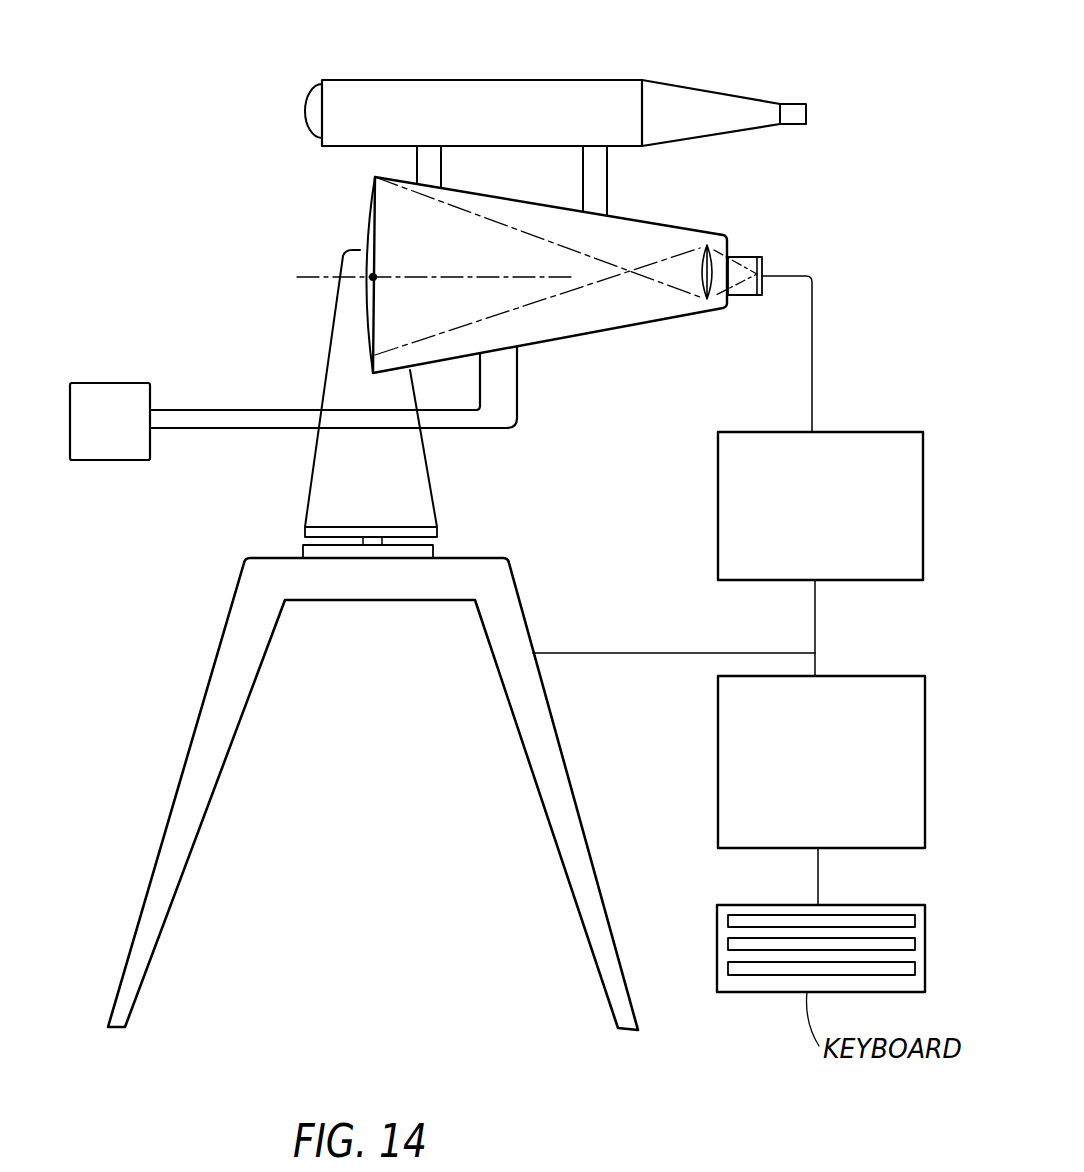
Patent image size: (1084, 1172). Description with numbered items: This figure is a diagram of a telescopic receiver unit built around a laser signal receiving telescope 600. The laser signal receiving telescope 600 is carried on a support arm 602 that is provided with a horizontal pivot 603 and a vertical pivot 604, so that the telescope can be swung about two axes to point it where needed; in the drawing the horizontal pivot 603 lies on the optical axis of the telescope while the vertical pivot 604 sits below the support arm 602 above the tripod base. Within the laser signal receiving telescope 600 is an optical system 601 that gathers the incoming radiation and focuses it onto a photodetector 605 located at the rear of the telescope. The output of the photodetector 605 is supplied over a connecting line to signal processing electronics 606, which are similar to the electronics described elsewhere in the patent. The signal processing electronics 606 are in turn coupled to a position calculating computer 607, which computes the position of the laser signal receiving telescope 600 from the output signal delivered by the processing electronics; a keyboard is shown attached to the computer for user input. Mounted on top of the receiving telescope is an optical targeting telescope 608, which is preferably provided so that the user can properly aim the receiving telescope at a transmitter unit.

The laser signal receiving telescope 600 is at (392, 210).
The optical system 601 is at (697, 301).
The support arm 602 is at (441, 488).
The horizontal pivot 603 is at (383, 269).
The vertical pivot 604 is at (369, 551).
The photodetector 605 is at (770, 257).
The signal processing electronics 606 is at (870, 430).
The position calculating computer 607 is at (717, 772).
The optical targeting telescope 608 is at (318, 75).